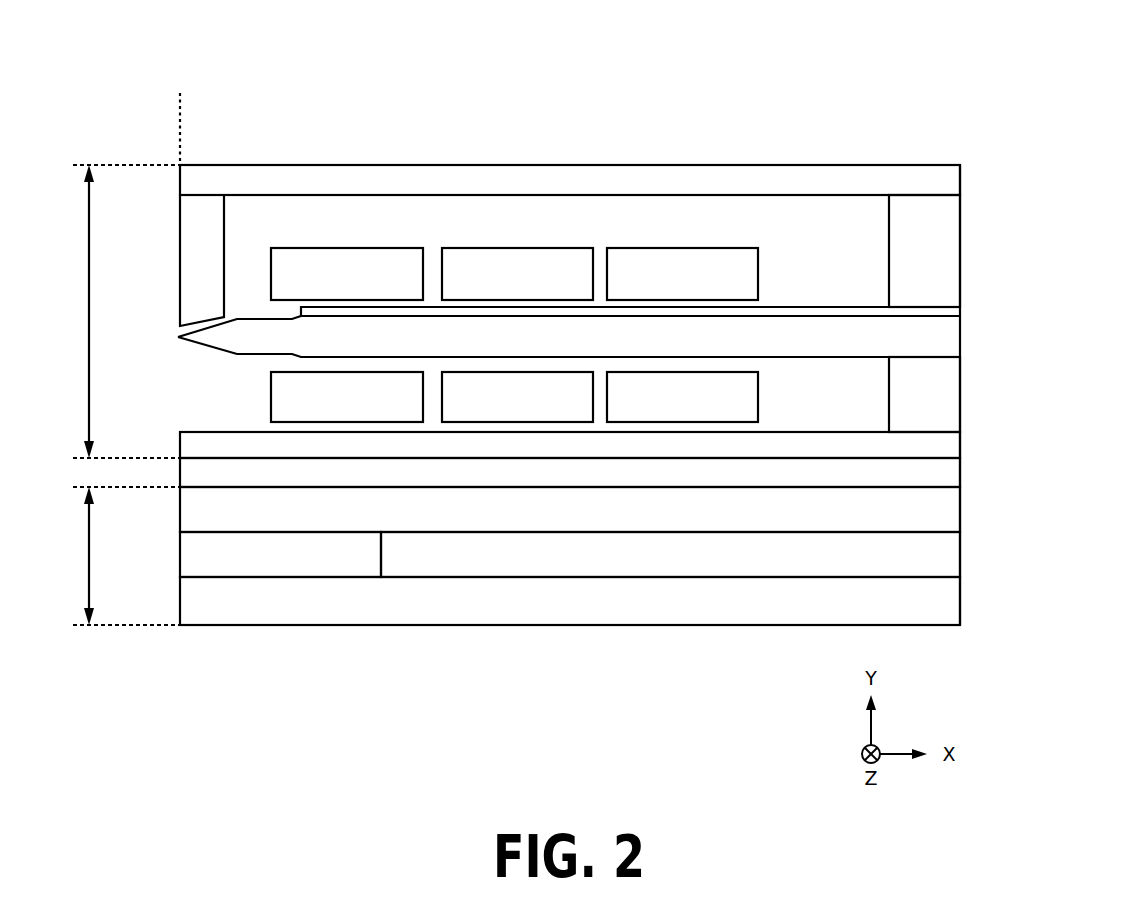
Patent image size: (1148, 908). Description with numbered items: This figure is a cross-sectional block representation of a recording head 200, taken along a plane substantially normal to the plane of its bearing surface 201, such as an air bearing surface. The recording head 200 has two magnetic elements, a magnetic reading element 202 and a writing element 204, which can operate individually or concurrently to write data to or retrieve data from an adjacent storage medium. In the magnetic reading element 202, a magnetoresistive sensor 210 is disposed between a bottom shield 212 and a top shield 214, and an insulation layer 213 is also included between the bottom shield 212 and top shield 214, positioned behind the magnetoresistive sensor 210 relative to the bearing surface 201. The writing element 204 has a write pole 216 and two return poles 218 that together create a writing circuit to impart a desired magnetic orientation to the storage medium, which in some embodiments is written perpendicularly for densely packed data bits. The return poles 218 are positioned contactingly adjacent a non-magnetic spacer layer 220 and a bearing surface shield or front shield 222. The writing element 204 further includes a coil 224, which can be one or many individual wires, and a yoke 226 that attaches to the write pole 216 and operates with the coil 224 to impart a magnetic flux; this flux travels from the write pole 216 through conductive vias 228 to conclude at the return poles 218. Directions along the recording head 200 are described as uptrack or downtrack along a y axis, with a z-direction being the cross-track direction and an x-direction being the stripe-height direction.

The recording head 200 is at (770, 124).
The bearing surface 201 is at (180, 188).
The magnetic reading element 202 is at (89, 535).
The writing element 204 is at (88, 313).
The magnetoresistive (MR) sensor 210 is at (193, 566).
The bottom shield 212 is at (193, 612).
The insulation layer 213 is at (844, 566).
The top shield 214 is at (193, 520).
The write pole 216 is at (235, 349).
The return pole 218 is at (193, 194).
The non-magnetic spacer layer 220 is at (903, 485).
The front shield 222 is at (193, 262).
The coil 224 is at (329, 285).
The yoke 226 is at (832, 309).
The conductive via 228 is at (907, 264).